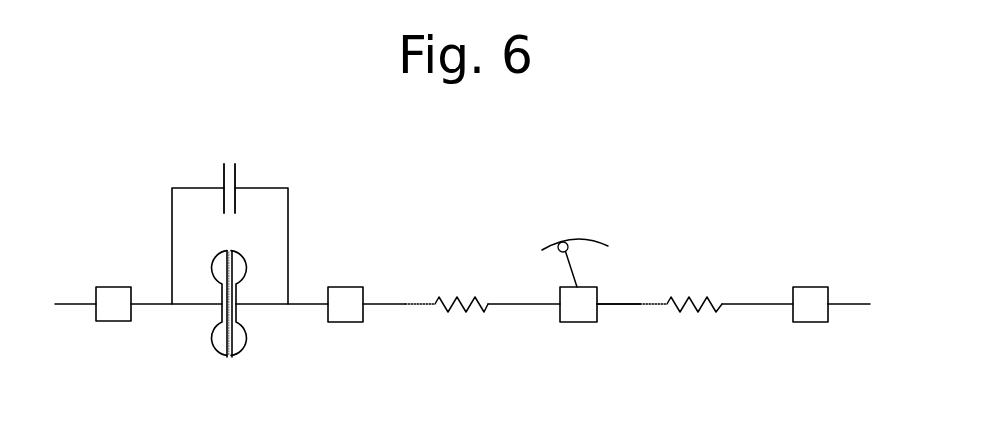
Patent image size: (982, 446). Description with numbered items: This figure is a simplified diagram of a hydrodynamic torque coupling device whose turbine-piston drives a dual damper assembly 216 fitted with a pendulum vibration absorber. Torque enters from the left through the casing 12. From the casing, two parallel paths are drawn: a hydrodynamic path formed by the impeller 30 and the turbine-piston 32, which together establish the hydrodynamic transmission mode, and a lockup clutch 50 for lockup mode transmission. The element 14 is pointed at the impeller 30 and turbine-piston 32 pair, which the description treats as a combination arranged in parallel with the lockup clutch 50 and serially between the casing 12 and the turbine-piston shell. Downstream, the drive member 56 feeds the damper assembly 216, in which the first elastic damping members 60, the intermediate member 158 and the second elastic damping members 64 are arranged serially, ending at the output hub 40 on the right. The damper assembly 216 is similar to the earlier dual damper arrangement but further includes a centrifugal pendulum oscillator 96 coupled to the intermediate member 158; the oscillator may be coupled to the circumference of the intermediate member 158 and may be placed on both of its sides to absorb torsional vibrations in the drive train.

The casing 12 is at (112, 293).
The crystal oscillator element 14 is at (203, 284).
The impeller 30 is at (213, 340).
The turbine-piston 32 is at (245, 340).
The lockup clutch 50 is at (250, 172).
The drive member 56 is at (348, 295).
The elastic damping members 60 is at (457, 312).
The centrifugal pendulum oscillator 96 is at (599, 226).
The intermediate member 158 is at (577, 313).
The damper assembly 216 is at (654, 269).
The elastic damping members 64 is at (690, 313).
The output hub 40 is at (812, 292).